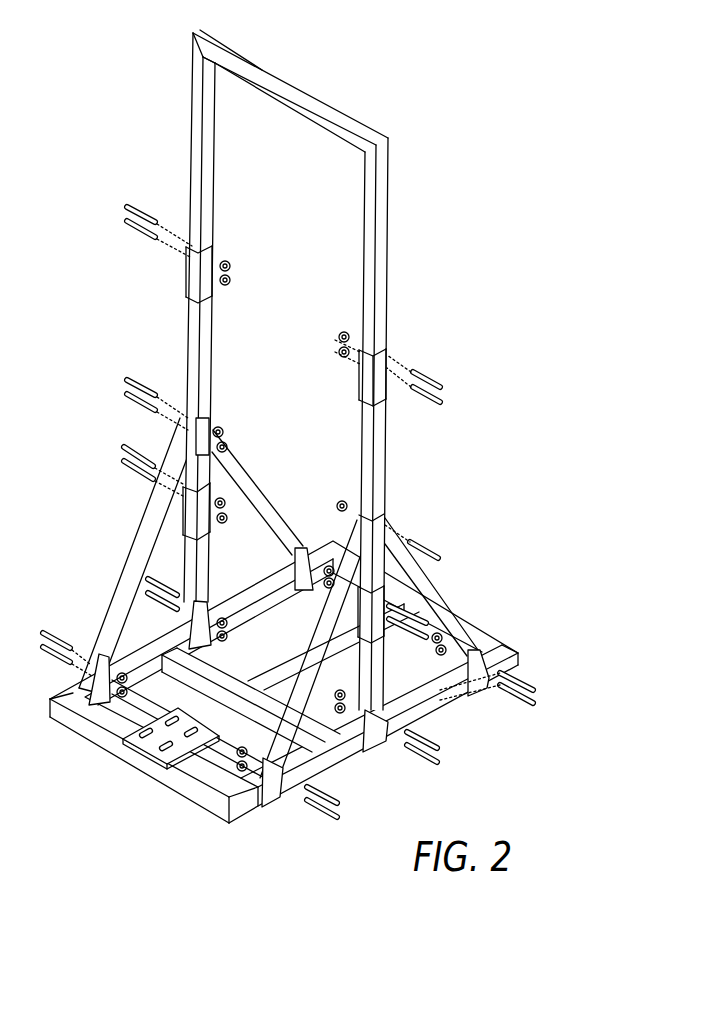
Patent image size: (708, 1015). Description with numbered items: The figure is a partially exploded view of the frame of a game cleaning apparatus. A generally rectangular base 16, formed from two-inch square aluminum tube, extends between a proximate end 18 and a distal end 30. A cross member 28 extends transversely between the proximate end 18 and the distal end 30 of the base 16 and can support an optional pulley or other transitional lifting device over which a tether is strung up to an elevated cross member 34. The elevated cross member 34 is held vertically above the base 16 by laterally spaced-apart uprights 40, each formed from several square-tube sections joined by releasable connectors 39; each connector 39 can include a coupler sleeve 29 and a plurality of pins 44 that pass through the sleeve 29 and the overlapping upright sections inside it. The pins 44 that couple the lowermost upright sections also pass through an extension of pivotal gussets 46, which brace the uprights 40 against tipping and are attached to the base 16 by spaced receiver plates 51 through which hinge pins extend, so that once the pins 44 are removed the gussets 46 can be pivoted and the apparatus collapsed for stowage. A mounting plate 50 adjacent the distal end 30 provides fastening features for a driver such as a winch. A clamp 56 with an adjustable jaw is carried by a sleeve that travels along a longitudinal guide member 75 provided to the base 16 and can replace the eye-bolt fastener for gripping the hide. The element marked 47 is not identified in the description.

The base 16 is at (330, 682).
The proximate end 18 is at (492, 623).
The cross member 28 is at (178, 658).
The coupler sleeve 29 is at (190, 286).
The distal end 30 is at (100, 744).
The elevated cross member 34 is at (310, 92).
The releasable connectors 39 is at (396, 353).
The uprights 40 is at (184, 130).
The pins 44 is at (130, 225).
The pivotal gussets 46 is at (116, 592).
The brace mounting bracket 47 is at (215, 427).
The mounting plate 50 is at (148, 762).
The receiver plates 51 is at (300, 546).
The clamp 56 is at (450, 565).
The longitudinal guide member 75 is at (275, 678).